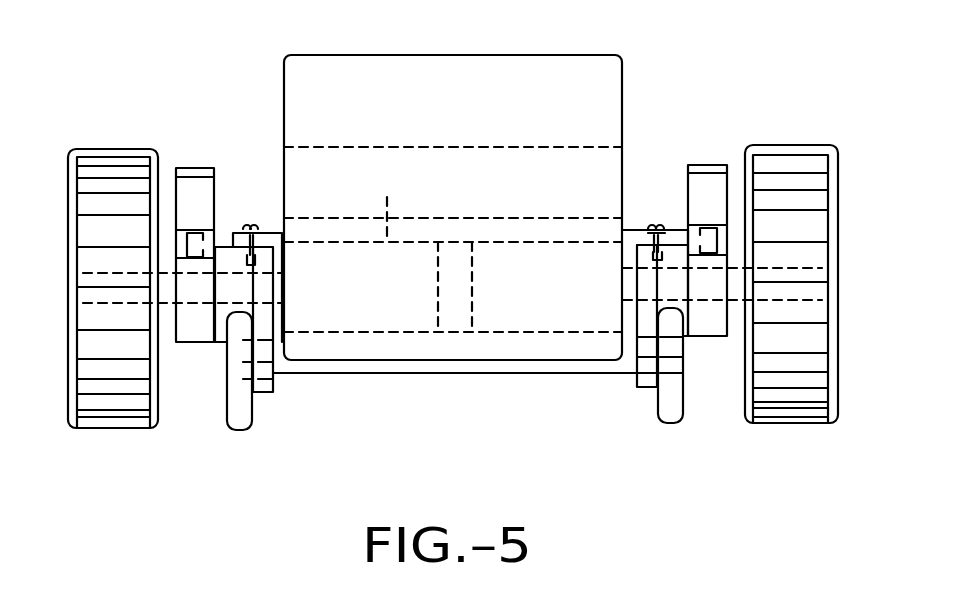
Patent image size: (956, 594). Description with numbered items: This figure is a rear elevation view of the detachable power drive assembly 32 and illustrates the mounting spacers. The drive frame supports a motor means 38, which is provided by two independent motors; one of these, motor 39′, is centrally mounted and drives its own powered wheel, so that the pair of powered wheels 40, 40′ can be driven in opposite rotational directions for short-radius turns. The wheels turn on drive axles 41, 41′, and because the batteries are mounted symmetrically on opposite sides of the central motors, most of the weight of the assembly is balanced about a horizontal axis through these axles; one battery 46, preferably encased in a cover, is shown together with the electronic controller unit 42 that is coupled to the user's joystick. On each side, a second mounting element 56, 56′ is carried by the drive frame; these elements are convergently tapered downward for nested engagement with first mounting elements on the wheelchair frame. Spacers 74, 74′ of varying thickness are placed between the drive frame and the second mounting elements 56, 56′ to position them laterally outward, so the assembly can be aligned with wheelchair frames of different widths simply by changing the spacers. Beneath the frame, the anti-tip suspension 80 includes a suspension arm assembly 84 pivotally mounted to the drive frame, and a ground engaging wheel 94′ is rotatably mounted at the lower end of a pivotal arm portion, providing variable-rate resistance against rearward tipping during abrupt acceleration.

The power drive assembly 32 is at (250, 38).
The motor means 38 is at (431, 222).
The motor 39′ is at (387, 197).
The powered wheel 40 is at (67, 178).
The powered wheel 40′ is at (765, 145).
The drive axle 41 is at (157, 333).
The drive axle 41′ is at (797, 297).
The electronic controller unit 42 is at (582, 147).
The battery 46 is at (440, 55).
The second mounting element 56 is at (192, 343).
The second mounting element 56′ is at (711, 337).
The spacer 74 is at (222, 245).
The spacer 74′ is at (682, 240).
The anti-tip suspension 80 is at (634, 401).
The suspension arm assembly 84 is at (267, 397).
The ground engaging wheel 94′ is at (675, 424).